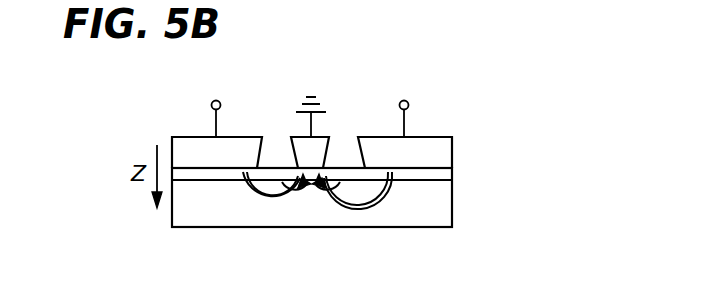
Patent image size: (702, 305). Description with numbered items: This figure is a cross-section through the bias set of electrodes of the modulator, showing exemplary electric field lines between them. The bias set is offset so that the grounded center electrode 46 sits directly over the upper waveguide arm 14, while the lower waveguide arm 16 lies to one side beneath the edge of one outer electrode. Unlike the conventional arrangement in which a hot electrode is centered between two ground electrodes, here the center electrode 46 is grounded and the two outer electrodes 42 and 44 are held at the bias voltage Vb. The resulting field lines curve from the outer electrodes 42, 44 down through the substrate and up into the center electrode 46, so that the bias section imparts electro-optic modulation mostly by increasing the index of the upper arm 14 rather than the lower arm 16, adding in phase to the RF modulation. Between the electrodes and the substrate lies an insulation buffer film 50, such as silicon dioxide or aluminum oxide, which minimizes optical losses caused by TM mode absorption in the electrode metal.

The upper arm 14 is at (309, 186).
The lower arm 16 is at (390, 184).
The outer bias electrode 42 is at (437, 137).
The outer bias electrode 44 is at (255, 137).
The center electrode 46 is at (325, 137).
The insulation buffer film 50 is at (453, 175).